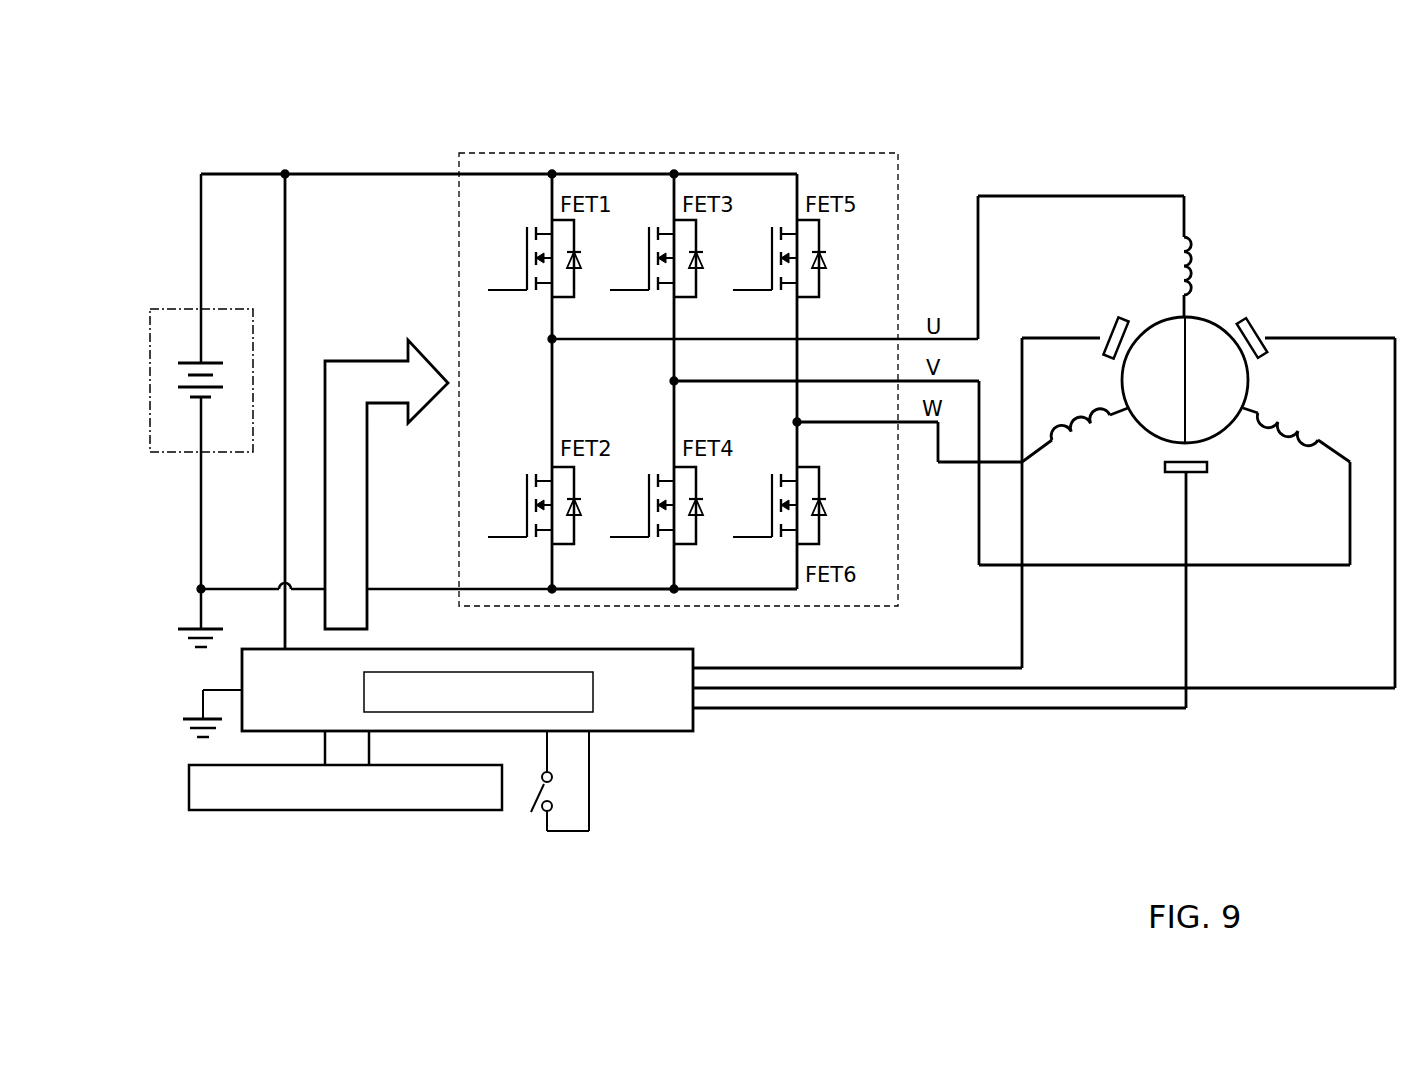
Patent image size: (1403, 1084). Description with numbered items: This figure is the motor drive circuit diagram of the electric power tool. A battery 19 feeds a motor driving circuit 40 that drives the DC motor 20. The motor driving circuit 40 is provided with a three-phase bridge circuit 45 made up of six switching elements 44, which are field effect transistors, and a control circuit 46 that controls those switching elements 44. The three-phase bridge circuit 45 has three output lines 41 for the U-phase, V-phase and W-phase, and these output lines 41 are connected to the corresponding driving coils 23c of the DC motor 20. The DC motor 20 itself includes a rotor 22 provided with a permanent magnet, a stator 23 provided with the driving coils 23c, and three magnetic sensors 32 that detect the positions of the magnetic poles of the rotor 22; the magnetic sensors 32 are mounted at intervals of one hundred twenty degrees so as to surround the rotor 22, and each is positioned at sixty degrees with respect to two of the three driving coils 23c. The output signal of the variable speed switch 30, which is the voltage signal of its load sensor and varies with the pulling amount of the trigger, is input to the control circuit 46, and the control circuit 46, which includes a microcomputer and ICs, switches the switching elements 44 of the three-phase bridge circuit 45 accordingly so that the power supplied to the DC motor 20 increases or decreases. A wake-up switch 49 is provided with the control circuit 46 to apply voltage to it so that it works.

The battery 19 is at (166, 303).
The motor driving circuit 40 is at (663, 138).
The three-phase bridge circuit 45 is at (808, 144).
The switching element 44 is at (822, 283).
The output line 41 is at (862, 340).
The DC motor 20 is at (1191, 374).
The rotor 22 is at (1160, 318).
The stator 23 is at (1191, 374).
The driving coil 23c is at (1200, 265).
The magnetic sensor 32 is at (1114, 322).
The control circuit 46 is at (663, 707).
The variable speed switch 30 is at (341, 823).
The wake-up switch 49 is at (540, 812).